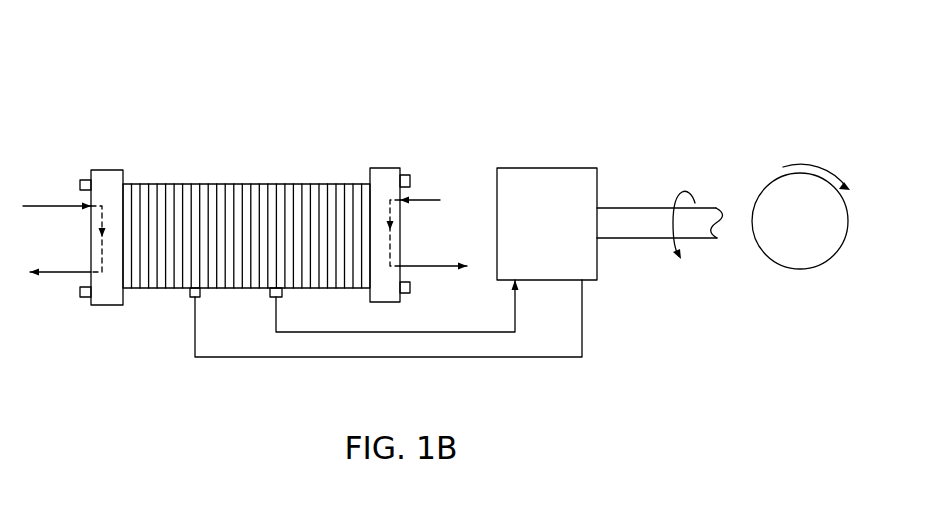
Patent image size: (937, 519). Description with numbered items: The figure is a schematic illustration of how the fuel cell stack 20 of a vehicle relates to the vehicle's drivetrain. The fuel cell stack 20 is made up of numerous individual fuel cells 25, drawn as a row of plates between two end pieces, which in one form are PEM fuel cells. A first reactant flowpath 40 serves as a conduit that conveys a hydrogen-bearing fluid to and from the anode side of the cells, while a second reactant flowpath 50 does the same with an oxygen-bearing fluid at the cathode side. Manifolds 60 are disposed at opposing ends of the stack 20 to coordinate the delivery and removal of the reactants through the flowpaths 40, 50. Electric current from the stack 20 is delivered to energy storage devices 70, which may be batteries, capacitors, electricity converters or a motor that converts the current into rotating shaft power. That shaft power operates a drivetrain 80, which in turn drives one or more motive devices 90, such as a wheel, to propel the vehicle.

The fuel cell stack 20 is at (134, 80).
The fuel cells 25 is at (230, 185).
The first reactant flowpath 40 is at (40, 203).
The second reactant flowpath 50 is at (433, 200).
The manifolds 60 is at (100, 305).
The energy storage devices 70 is at (562, 232).
The drivetrain 80 is at (630, 207).
The motive devices 90 is at (797, 268).